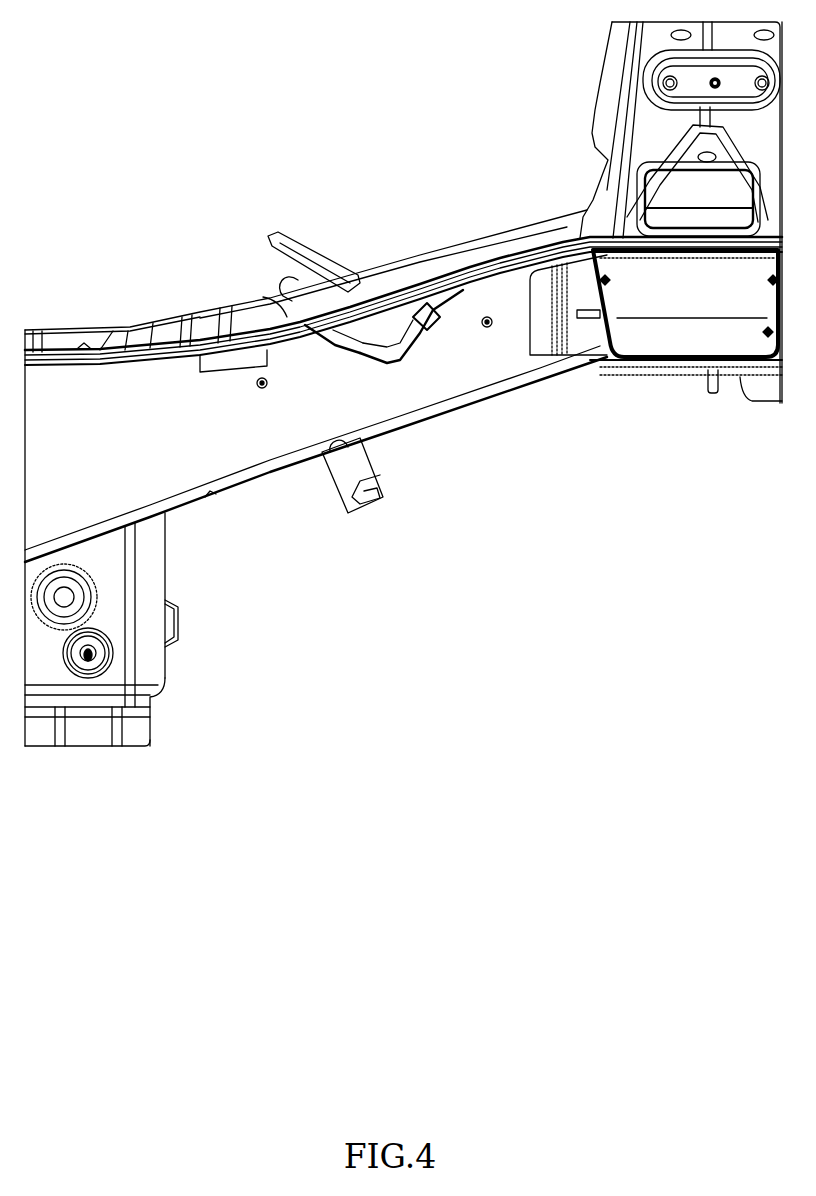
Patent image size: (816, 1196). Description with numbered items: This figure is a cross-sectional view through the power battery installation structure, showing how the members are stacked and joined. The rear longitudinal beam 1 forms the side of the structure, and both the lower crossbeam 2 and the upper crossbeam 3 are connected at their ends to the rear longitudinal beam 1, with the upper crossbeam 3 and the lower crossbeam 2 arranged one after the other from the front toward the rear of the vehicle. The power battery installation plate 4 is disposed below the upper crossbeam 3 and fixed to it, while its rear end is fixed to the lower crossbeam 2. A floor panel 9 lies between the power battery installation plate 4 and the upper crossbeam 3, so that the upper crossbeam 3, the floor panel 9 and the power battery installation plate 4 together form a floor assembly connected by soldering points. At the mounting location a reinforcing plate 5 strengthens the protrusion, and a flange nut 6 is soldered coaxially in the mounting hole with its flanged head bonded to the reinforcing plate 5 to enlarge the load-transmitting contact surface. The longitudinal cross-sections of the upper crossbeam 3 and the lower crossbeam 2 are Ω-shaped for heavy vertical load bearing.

The rear longitudinal beam 1 is at (295, 430).
The lower crossbeam 2 is at (605, 365).
The upper crossbeam 3 is at (470, 260).
The power battery installation plate 4 is at (337, 347).
The reinforcing plate 5 is at (395, 365).
The flange nut 6 is at (437, 330).
The floor panel 9 is at (250, 298).